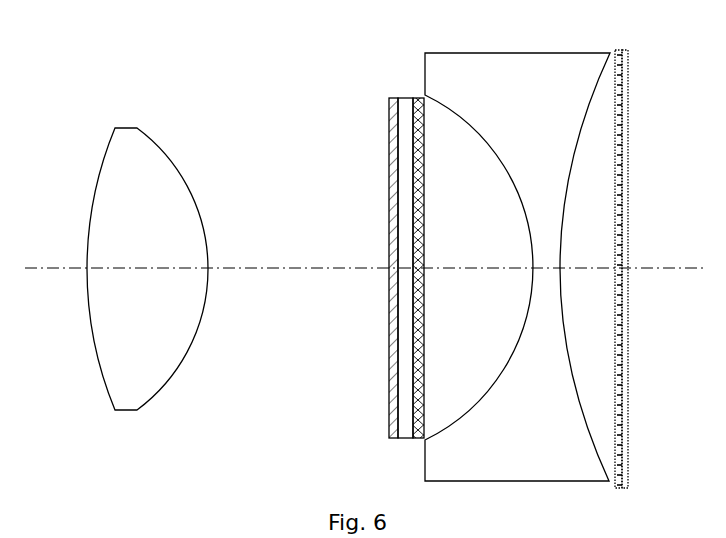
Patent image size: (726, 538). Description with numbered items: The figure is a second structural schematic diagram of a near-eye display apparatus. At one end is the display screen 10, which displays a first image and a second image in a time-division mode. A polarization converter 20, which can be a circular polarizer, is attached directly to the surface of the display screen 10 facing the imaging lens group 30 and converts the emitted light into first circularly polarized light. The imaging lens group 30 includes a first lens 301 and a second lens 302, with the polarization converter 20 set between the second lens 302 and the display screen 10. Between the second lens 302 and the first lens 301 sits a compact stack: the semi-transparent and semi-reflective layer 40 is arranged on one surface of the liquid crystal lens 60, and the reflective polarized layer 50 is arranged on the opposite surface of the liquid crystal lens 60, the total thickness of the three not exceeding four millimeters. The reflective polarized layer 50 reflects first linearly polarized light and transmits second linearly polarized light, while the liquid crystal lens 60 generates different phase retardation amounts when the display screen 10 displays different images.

The display screen 10 is at (626, 50).
The polarization converter 20 is at (618, 50).
The imaging lens group 30 is at (348, 248).
The first lens 301 is at (124, 128).
The second lens 302 is at (517, 53).
The semi-transparent and semi-reflective layer 40 is at (417, 97).
The reflective polarized layer 50 is at (392, 97).
The liquid crystal lens 60 is at (404, 97).